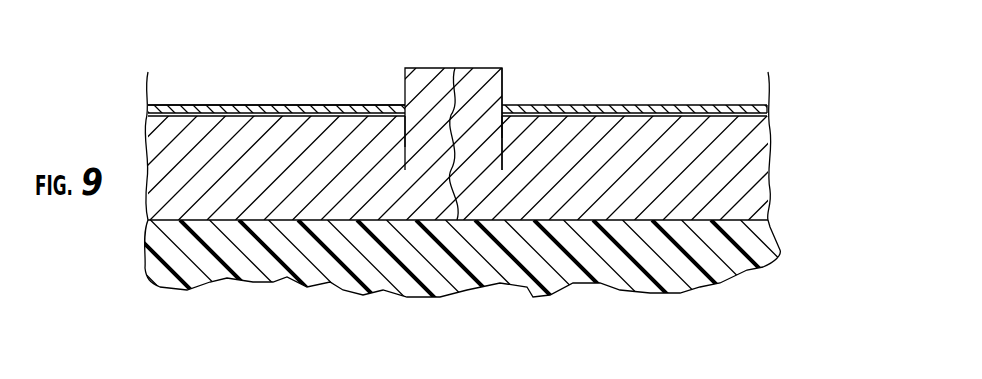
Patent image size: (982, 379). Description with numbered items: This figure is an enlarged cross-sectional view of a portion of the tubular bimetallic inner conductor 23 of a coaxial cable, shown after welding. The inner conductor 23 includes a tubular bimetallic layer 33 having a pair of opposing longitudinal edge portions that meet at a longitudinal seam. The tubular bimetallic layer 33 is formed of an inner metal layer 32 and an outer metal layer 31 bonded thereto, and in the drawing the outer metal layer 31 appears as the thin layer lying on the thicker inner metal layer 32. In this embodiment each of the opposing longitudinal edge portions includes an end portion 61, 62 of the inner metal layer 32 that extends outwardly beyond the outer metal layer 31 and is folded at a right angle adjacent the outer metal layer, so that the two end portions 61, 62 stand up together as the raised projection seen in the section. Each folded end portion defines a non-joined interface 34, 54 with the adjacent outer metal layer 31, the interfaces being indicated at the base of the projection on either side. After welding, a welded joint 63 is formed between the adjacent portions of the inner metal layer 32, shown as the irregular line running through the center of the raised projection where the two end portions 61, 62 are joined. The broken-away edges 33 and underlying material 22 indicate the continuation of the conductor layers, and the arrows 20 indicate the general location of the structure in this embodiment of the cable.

The coated substrate assembly 20 is at (197, 101).
The base substrate 22 is at (777, 257).
The inner conductor 23 is at (688, 92).
The outer metal layer 31 is at (751, 113).
The inner metal layer 32 is at (763, 177).
The tubular bimetallic layer 33 is at (145, 184).
The non-joined interface 34 is at (402, 147).
The non-joined interface 54 is at (502, 138).
The end portion 61 is at (403, 76).
The end portion 62 is at (504, 85).
The welded joint 63 is at (455, 68).